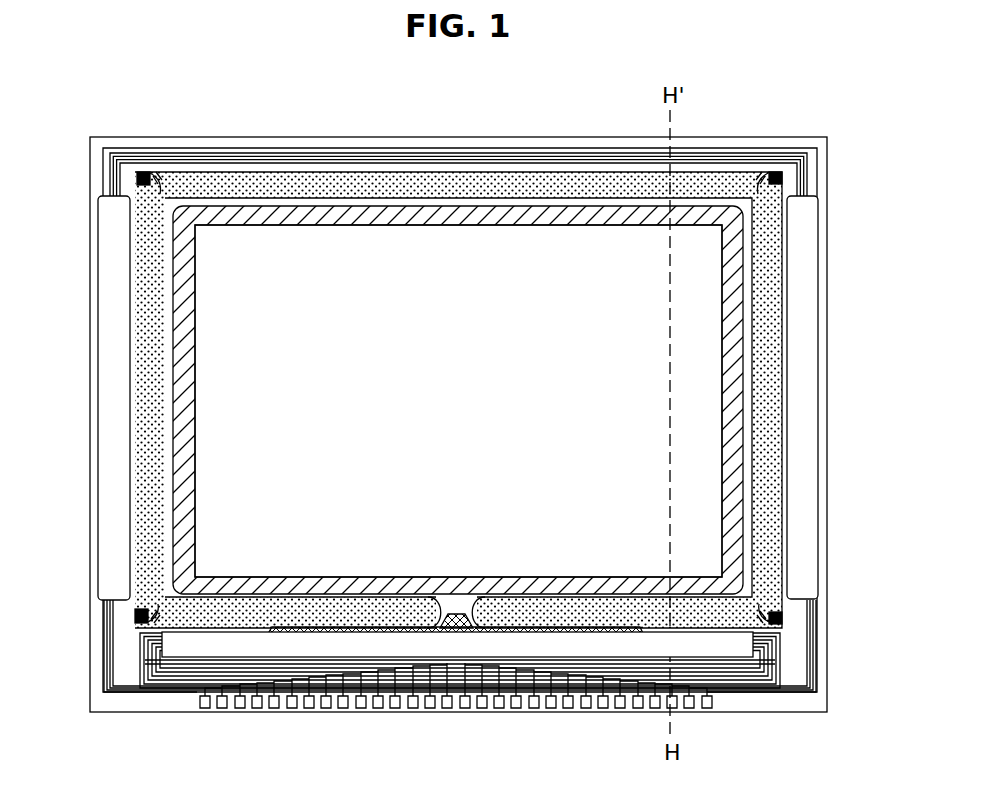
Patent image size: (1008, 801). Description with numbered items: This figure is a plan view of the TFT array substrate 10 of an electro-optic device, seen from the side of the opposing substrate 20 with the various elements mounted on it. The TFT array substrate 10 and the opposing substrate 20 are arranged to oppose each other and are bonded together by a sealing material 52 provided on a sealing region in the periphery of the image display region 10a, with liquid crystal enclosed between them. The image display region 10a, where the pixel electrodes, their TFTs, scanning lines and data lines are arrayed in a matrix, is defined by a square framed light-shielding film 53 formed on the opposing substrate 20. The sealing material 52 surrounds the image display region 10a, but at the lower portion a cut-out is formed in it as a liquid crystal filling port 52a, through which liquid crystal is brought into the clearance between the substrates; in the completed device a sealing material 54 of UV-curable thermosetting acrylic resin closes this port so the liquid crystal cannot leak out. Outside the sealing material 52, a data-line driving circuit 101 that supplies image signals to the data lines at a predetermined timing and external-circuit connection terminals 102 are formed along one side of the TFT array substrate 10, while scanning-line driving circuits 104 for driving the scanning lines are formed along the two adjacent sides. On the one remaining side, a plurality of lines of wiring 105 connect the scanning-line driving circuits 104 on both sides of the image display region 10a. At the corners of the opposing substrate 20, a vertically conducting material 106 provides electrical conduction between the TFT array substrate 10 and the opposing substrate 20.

The TFT array substrate 10 is at (203, 137).
The image display region 10a is at (480, 412).
The opposing substrate 20 is at (293, 172).
The sealing material 52 is at (770, 362).
The liquid crystal filling port 52a is at (458, 603).
The framed light-shielding film 53 is at (183, 320).
The sealing material 54 is at (472, 642).
The data-line driving circuit 101 is at (195, 648).
The external-circuit connection terminals 102 is at (345, 708).
The scanning-line driving circuit 104 is at (110, 438).
The wiring 105 is at (415, 152).
The vertically conducting material 106 is at (140, 181).